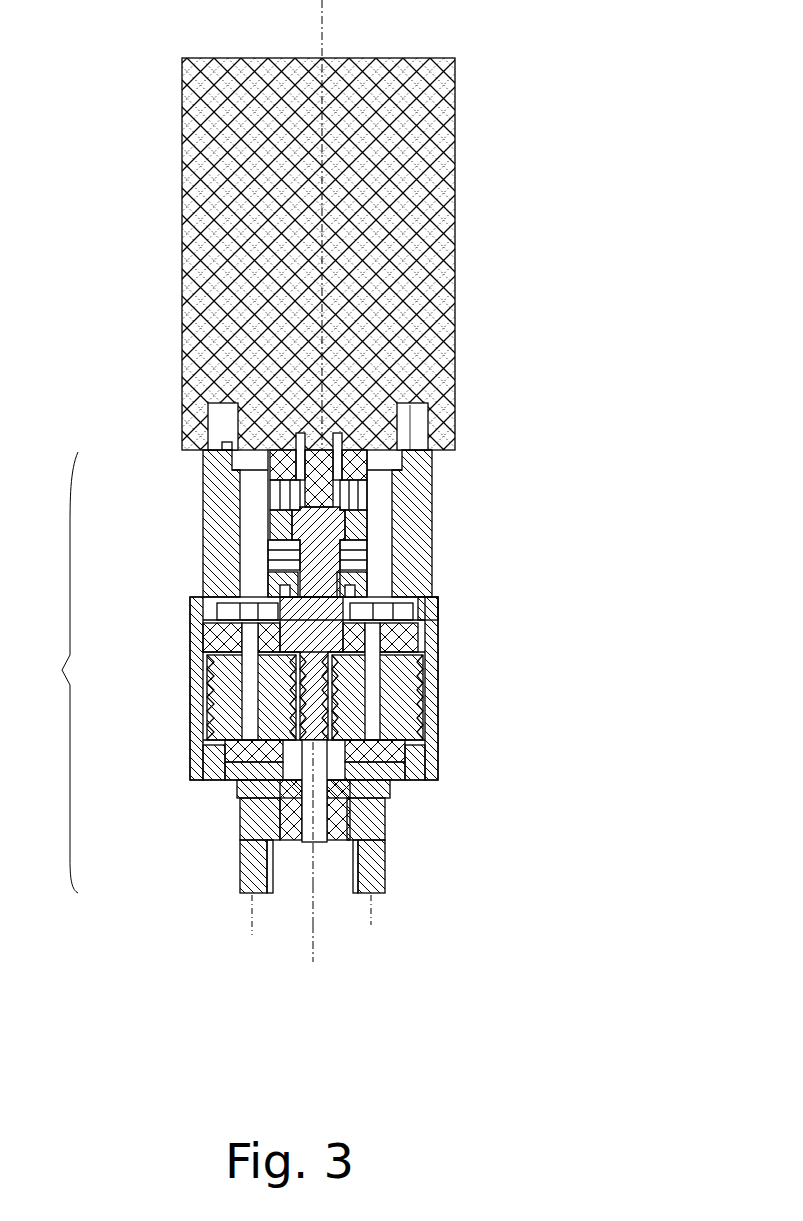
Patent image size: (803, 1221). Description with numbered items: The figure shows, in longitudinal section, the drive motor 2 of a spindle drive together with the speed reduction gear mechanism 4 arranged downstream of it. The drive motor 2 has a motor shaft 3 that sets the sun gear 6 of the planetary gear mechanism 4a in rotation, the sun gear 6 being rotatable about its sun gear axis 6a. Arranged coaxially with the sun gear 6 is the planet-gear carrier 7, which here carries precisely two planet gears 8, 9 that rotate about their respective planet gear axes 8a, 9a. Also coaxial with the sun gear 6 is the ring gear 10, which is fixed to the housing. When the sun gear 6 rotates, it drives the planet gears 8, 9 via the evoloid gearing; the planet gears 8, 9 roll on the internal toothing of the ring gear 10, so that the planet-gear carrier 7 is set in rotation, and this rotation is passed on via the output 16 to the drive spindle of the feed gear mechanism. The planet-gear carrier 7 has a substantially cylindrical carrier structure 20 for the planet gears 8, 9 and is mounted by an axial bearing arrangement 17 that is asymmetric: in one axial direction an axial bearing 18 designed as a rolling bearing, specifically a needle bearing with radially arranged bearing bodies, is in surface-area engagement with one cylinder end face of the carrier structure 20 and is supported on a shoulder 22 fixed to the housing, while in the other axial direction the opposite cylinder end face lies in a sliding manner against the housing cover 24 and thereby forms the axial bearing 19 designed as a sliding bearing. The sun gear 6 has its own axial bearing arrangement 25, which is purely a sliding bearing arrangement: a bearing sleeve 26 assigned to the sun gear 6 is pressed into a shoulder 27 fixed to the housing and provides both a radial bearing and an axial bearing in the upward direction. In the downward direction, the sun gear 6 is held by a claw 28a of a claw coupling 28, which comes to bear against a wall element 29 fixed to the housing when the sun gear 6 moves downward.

The drive motor 2 is at (405, 186).
The motor shaft 3 is at (323, 468).
The speed reduction gear mechanism 4 is at (56, 672).
The planetary gear mechanism 4a is at (467, 604).
The sun gear 6 is at (400, 711).
The planet-gear carrier 7 is at (443, 673).
The planet gear 8 is at (233, 696).
The planet gear 9 is at (427, 735).
The ring gear 10 is at (437, 689).
The output 16 is at (245, 847).
The axial bearing arrangement 17 is at (396, 600).
The axial bearing 18 is at (251, 697).
The axial bearing 19 is at (408, 777).
The carrier structure 20 is at (438, 636).
The shoulder 22 is at (199, 597).
The housing cover 24 is at (226, 786).
The axial bearing arrangement 25 is at (376, 486).
The bearing sleeve 26 is at (366, 578).
The shoulder 27 is at (260, 562).
The claw coupling 28 is at (270, 528).
The claw 28a is at (235, 455).
The wall element 29 is at (258, 478).
The sun gear axis 6a is at (313, 940).
The planet gear axis 8a is at (252, 920).
The planet gear axis 9a is at (373, 913).